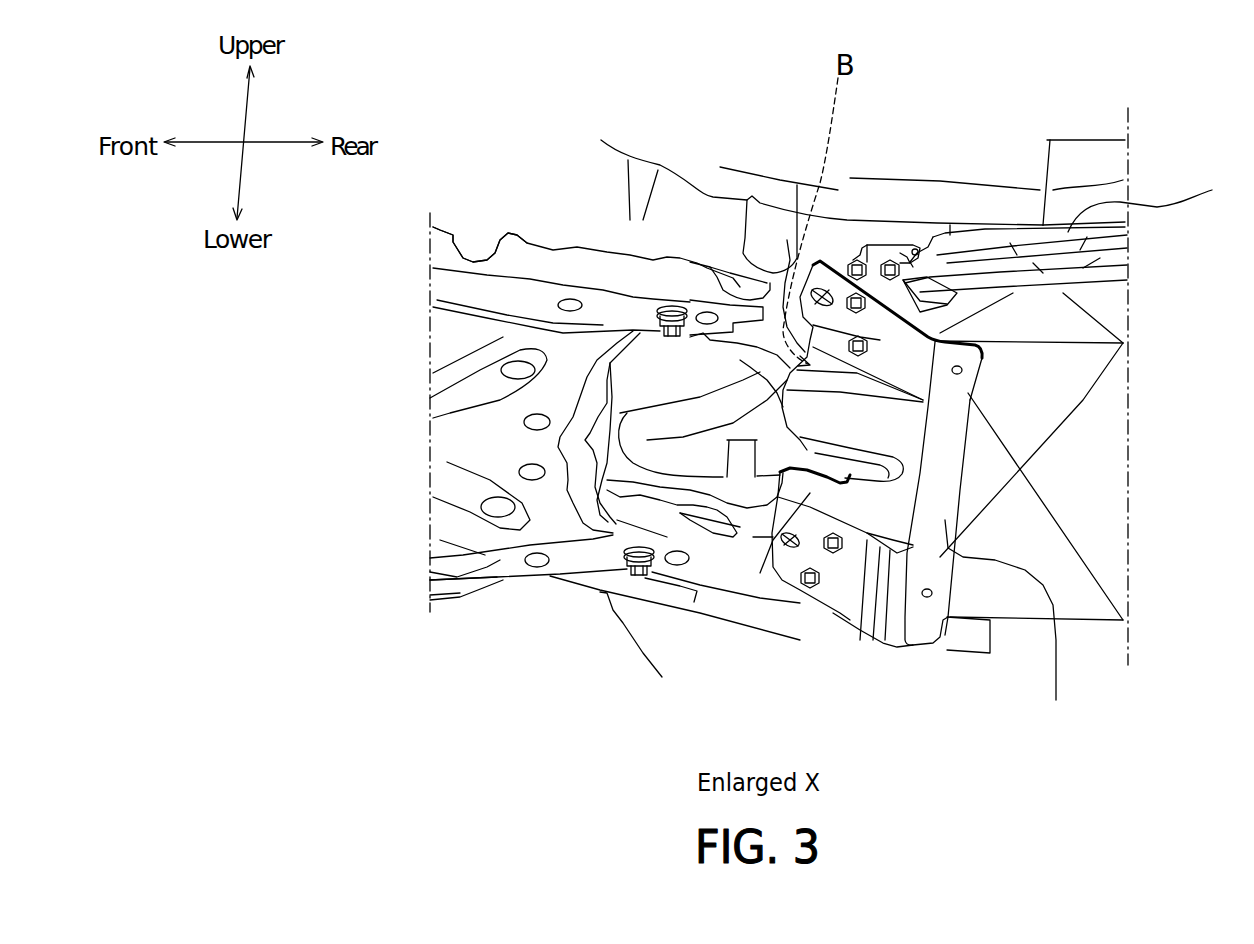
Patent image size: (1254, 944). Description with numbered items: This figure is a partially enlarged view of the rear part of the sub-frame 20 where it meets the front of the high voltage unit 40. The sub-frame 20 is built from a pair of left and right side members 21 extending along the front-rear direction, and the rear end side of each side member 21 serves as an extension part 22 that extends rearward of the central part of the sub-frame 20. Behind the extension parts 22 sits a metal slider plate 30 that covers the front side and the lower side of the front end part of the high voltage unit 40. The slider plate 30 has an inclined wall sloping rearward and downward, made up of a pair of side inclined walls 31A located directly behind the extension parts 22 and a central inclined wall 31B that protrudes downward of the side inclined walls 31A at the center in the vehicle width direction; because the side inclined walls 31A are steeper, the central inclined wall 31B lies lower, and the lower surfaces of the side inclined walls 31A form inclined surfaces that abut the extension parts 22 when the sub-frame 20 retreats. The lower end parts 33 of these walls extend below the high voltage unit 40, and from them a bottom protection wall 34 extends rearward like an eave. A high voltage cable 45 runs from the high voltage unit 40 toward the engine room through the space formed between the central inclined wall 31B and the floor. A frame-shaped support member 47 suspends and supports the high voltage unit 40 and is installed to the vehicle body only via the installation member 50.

The sub-frame 20 is at (527, 587).
The side member 21 is at (520, 245).
The extension part 22 is at (774, 250).
The slider plate 30 is at (848, 441).
The side inclined wall 31A is at (890, 337).
The central inclined wall 31B is at (757, 560).
The lower end part 33 is at (933, 647).
The bottom protection wall 34 is at (985, 504).
The high voltage unit 40 is at (1098, 453).
The high voltage cable 45 is at (713, 407).
The support member 47 is at (1143, 186).
The installation member 50 is at (847, 257).